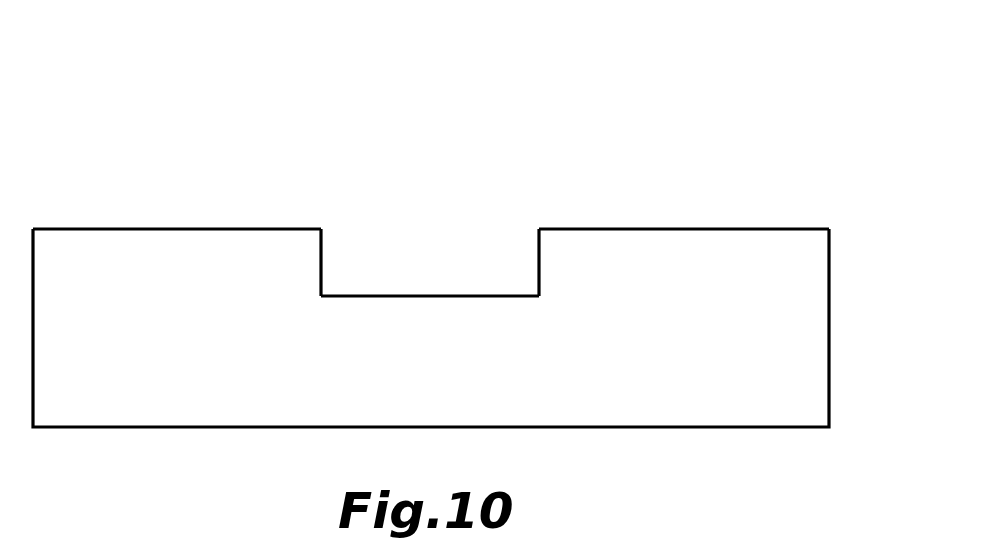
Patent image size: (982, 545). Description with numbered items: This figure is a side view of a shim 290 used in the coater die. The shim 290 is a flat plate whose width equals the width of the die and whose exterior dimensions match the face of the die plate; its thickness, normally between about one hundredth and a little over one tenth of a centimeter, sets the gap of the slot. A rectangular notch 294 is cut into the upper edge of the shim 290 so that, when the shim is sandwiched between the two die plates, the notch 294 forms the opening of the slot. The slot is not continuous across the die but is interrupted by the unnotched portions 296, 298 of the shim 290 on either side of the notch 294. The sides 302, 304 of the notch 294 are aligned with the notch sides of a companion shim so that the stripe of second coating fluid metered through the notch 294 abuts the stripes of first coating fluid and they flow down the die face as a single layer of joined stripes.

The shim 290 is at (831, 274).
The notch 294 is at (413, 294).
The unnotched portion 296 is at (89, 229).
The unnotched portion 298 is at (762, 228).
The side of the notch 302 is at (323, 262).
The side of the notch 304 is at (536, 268).